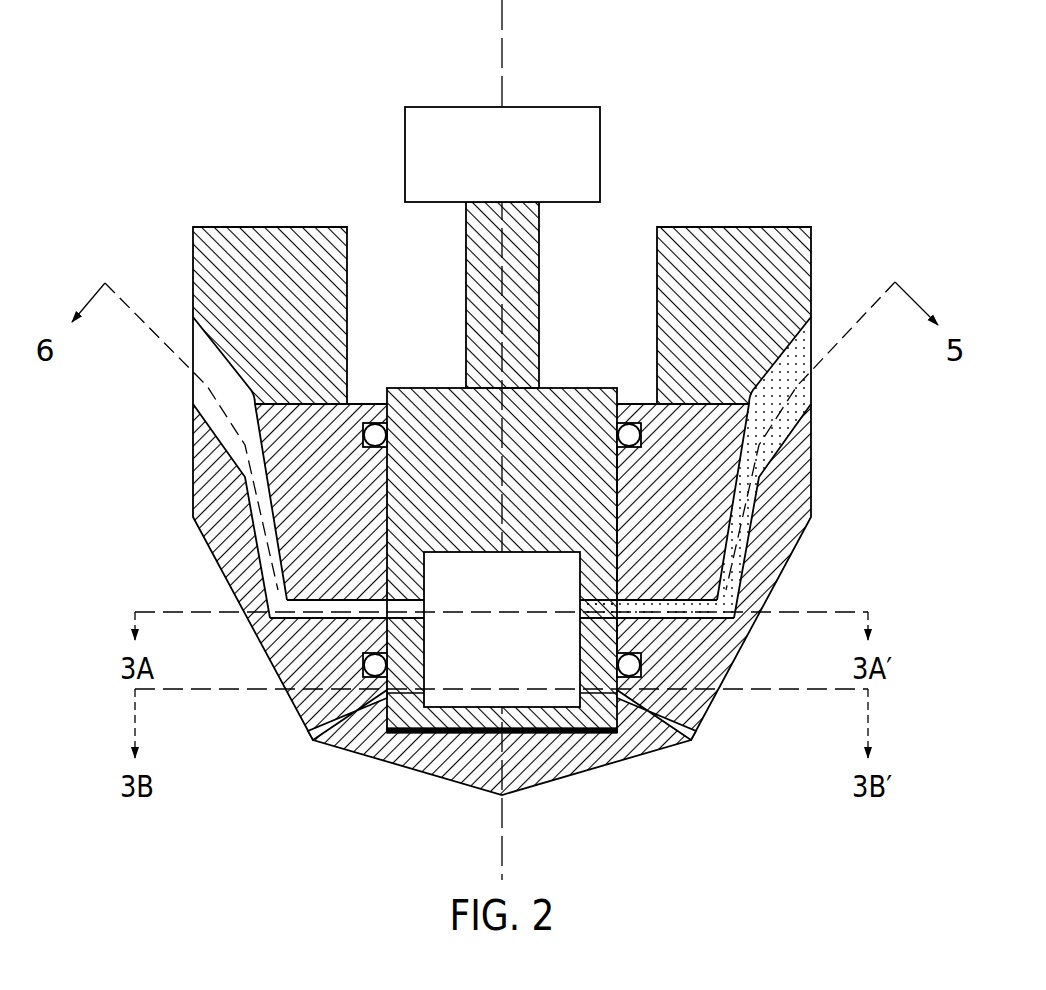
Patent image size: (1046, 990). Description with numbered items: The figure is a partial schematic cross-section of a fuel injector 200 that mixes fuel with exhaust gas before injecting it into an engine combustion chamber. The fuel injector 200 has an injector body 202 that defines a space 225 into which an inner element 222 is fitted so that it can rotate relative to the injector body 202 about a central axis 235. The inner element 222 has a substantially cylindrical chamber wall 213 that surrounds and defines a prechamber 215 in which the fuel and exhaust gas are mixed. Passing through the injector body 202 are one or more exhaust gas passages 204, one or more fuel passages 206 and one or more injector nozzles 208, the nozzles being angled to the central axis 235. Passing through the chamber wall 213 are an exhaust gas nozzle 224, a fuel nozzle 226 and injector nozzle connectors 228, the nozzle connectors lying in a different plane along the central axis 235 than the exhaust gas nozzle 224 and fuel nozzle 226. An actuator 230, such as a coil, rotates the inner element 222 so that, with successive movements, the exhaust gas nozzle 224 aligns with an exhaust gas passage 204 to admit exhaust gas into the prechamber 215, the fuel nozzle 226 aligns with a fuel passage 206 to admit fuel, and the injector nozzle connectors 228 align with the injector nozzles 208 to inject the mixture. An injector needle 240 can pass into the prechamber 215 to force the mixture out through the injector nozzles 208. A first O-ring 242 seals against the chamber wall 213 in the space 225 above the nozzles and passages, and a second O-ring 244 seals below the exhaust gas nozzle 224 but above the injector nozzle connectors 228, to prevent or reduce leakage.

The fuel injector 200 is at (858, 146).
The injector body 202 is at (804, 438).
The exhaust gas passage 204 is at (751, 507).
The fuel passage 206 is at (251, 502).
The injector nozzle 208 is at (314, 740).
The chamber wall 213 is at (620, 636).
The prechamber 215 is at (509, 598).
The inner element 222 is at (450, 388).
The exhaust gas nozzle 224 is at (607, 607).
The space 225 is at (612, 463).
The fuel nozzle 226 is at (398, 597).
The injector nozzle connector 228 is at (405, 694).
The actuator 230 is at (600, 153).
The central axis 235 is at (506, 40).
The injector needle 240 is at (466, 295).
The first O-ring 242 is at (629, 412).
The second O-ring 244 is at (368, 665).